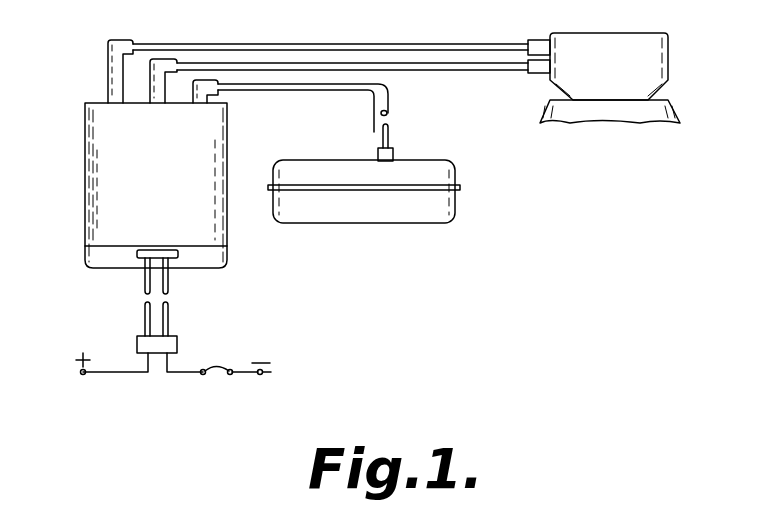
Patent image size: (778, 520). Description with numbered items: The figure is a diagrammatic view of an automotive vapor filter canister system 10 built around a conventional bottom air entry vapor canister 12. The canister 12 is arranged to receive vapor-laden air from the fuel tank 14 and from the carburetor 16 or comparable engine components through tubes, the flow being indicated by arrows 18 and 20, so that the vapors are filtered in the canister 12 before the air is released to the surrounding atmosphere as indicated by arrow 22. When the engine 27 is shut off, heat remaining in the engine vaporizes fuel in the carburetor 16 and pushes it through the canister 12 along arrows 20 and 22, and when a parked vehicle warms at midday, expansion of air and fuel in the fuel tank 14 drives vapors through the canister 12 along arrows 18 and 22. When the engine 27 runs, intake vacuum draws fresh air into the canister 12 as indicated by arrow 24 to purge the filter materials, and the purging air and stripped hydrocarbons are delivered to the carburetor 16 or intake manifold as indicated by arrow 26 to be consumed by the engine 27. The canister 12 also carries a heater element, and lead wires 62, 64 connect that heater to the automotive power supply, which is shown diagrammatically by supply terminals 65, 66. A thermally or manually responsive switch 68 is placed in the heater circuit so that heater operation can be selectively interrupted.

The automotive vapor filter canister system 10 is at (535, 20).
The bottom air entry vapor canister 12 is at (112, 166).
The fuel tank 14 is at (405, 212).
The carburetor 16 is at (657, 63).
The arrow (vapor flow from fuel tank) 18 is at (374, 113).
The arrow (vapor flow from carburetor) 20 is at (487, 81).
The arrow (filtered air release) 22 is at (200, 303).
The arrow (fresh air intake) 24 is at (115, 274).
The arrow (purge flow to engine) 26 is at (372, 30).
The engine 27 is at (672, 113).
The lead wire 62 is at (138, 293).
The lead wire 64 is at (172, 290).
The supply terminal 65 is at (83, 377).
The supply terminal 66 is at (272, 373).
The switch 68 is at (218, 362).